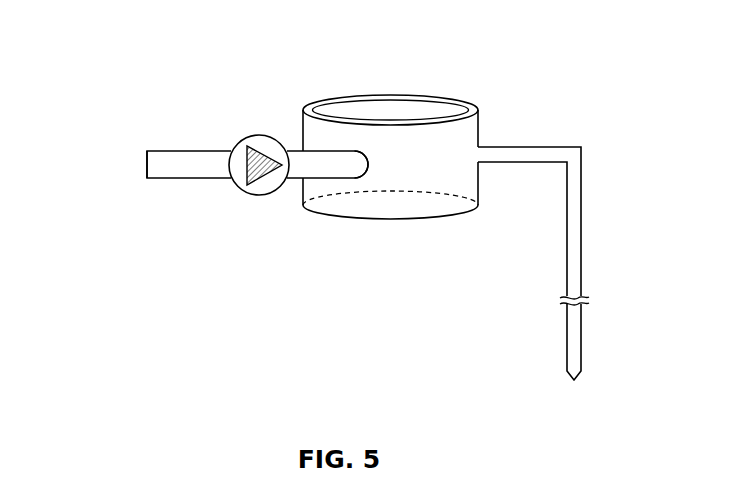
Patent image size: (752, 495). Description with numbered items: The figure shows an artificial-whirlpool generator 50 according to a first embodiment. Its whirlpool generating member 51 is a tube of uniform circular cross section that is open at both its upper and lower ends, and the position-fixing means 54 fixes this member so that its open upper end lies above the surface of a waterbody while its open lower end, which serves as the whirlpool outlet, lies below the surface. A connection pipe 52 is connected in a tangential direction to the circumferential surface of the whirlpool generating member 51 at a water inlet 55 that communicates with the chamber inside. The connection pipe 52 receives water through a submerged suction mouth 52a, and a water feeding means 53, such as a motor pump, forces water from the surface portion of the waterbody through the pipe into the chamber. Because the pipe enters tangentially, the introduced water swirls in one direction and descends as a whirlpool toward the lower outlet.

The artificial-whirlpool generator 50 is at (510, 73).
The whirlpool generating member 51 is at (436, 94).
The connection pipe 52 is at (192, 150).
The suction mouth 52a is at (147, 165).
The water feeding means 53 is at (262, 134).
The position-fixing means 54 is at (582, 222).
The water inlet 55 is at (363, 167).